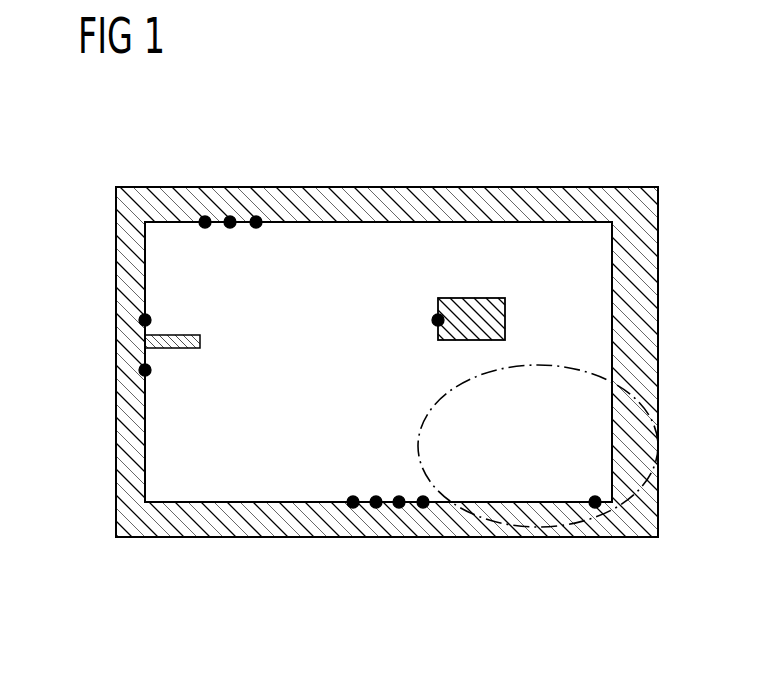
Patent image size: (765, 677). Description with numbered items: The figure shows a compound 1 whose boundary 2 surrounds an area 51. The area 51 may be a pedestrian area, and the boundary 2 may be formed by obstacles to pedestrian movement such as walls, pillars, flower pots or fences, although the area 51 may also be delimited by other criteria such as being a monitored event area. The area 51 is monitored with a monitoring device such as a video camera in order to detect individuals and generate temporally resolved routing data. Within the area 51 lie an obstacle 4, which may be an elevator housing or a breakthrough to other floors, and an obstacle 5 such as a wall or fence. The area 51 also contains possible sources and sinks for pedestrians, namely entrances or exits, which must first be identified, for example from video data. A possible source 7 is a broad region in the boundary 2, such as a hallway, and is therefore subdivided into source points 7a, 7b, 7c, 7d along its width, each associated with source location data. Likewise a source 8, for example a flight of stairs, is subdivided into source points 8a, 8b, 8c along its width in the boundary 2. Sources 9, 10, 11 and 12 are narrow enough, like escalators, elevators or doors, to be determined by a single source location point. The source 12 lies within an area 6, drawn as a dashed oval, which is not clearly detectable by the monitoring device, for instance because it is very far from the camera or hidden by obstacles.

The compound 1 is at (605, 113).
The boundary 2 is at (523, 200).
The obstacle 4 is at (470, 298).
The obstacle 5 is at (201, 342).
The area 6 is at (545, 365).
The possible source 7 is at (315, 591).
The source point 7a is at (353, 504).
The source point 7b is at (376, 504).
The source point 7c is at (399, 504).
The source point 7d is at (423, 504).
The source 8 is at (170, 121).
The source point 8a is at (205, 218).
The source point 8b is at (230, 218).
The source point 8c is at (256, 218).
The source 9 is at (150, 320).
The source 10 is at (147, 370).
The source 11 is at (436, 320).
The source 12 is at (595, 500).
The area 51 is at (375, 238).